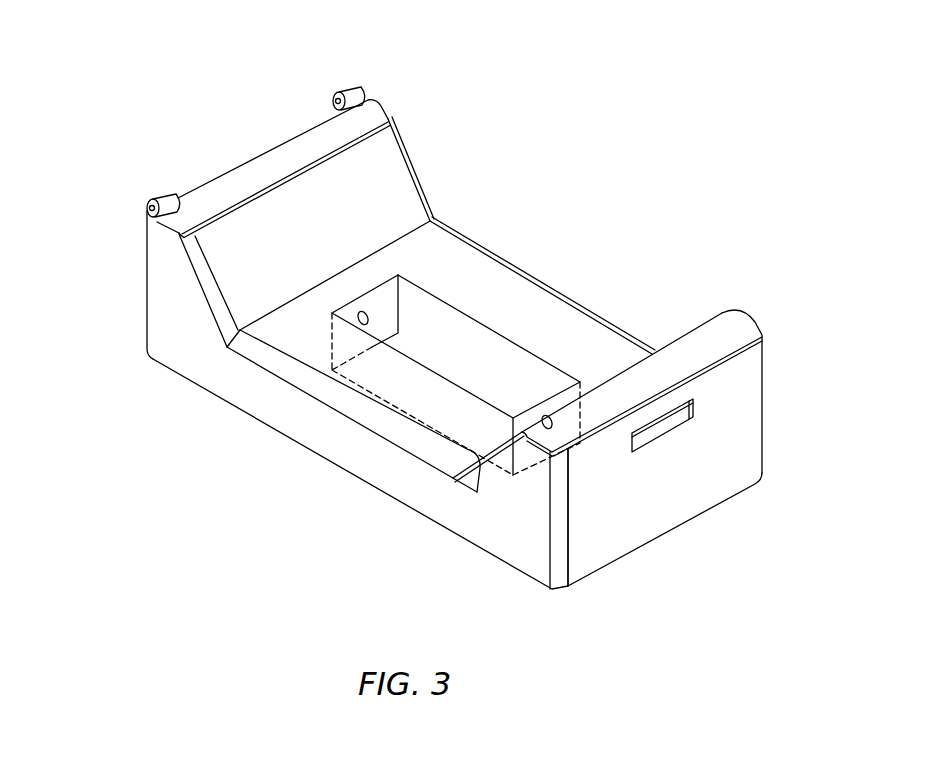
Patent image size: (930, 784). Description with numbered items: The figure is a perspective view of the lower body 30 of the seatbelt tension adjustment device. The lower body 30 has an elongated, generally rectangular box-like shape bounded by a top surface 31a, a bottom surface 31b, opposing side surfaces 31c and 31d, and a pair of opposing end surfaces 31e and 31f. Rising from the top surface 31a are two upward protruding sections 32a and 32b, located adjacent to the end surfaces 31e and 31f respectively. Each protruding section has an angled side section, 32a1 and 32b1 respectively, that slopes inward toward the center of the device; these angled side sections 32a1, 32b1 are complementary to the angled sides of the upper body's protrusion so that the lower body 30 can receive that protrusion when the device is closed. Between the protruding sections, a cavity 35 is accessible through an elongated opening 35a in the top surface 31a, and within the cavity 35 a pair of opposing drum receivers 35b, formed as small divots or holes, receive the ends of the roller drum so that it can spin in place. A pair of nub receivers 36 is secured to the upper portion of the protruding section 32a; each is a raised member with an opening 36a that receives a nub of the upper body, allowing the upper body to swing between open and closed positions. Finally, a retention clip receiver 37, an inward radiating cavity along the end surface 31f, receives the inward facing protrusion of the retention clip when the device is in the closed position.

The lower body 30 is at (552, 86).
The top surface 31a is at (498, 285).
The bottom surface 31b is at (226, 409).
The side surface 31c is at (530, 535).
The side surface 31d is at (766, 372).
The end surface 31e is at (140, 277).
The end surface 31f is at (693, 463).
The upward protruding section 32a is at (278, 160).
The angled side section 32a1 is at (388, 172).
The upward protruding section 32b is at (683, 350).
The angled side section 32b1 is at (494, 448).
The cavity 35 is at (453, 373).
The elongated opening 35a is at (498, 340).
The drum receivers 35b is at (370, 317).
The nub receivers 36 is at (352, 87).
The opening 36a is at (336, 100).
The retention clip receiver 37 is at (695, 410).